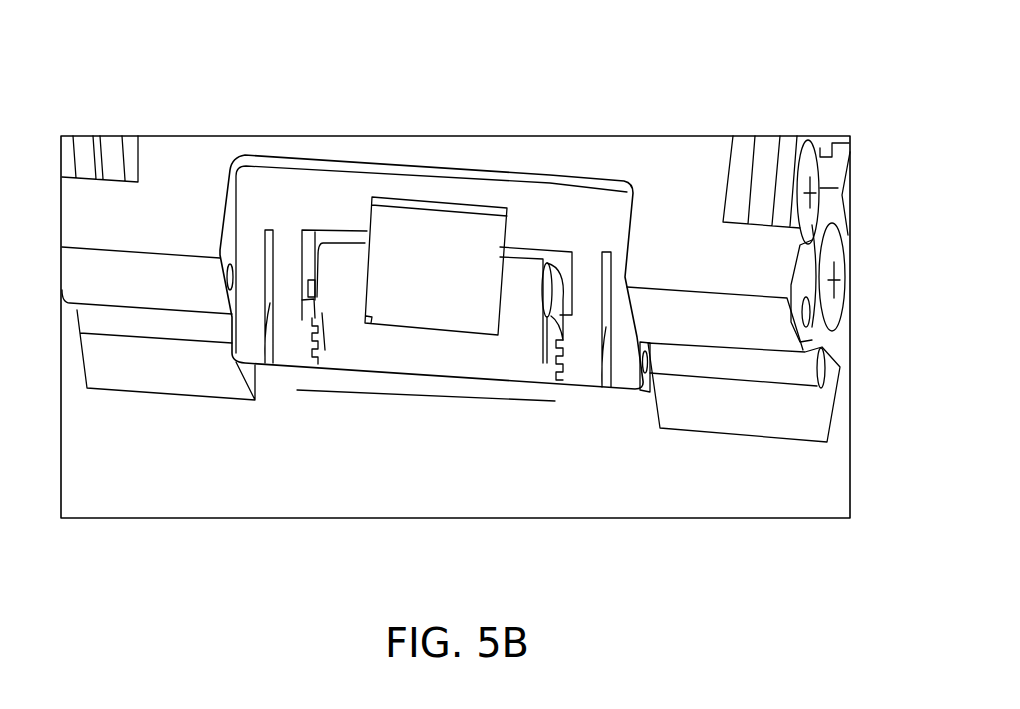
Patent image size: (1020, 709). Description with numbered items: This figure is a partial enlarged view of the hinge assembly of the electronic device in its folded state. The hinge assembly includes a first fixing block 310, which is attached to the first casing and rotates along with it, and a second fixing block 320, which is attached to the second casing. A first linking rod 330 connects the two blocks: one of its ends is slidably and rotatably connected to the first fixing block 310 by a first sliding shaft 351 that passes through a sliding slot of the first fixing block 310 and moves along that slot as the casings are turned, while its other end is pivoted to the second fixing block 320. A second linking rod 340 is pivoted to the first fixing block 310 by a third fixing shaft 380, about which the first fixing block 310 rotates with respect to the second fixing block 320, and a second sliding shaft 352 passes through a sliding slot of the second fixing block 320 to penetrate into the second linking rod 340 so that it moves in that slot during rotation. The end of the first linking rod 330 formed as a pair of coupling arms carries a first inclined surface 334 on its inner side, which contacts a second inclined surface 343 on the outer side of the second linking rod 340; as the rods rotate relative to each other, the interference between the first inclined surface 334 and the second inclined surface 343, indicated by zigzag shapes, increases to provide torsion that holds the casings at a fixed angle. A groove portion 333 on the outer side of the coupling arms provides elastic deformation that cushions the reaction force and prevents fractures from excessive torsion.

The first fixing block 310 is at (655, 152).
The second fixing block 320 is at (746, 418).
The first linking rod 330 is at (546, 205).
The groove portion 333 is at (262, 258).
The first inclined surface 334 is at (318, 311).
The second linking rod 340 is at (376, 348).
The second inclined surface 343 is at (301, 335).
The first sliding shaft 351 is at (815, 163).
The second sliding shaft 352 is at (838, 240).
The third fixing shaft 380 is at (647, 345).